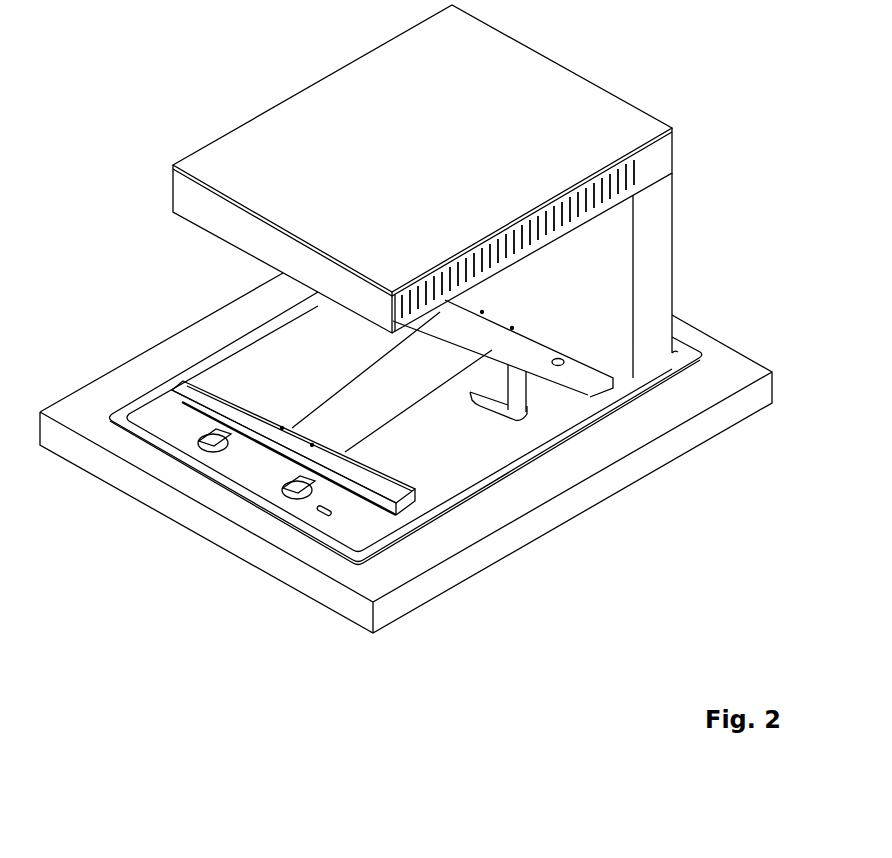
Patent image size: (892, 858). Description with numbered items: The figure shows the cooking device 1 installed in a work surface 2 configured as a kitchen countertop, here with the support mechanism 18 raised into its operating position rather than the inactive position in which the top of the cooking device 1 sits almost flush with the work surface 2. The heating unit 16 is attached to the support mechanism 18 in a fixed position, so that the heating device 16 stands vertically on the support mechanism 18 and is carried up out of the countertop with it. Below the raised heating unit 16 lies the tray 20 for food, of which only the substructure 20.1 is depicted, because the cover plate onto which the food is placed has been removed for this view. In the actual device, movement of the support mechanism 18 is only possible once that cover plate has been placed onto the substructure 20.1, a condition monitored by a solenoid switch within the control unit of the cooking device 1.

The cooking device 1 is at (407, 546).
The work surface 2 is at (545, 478).
The heating unit 16 is at (510, 152).
The support mechanism 18 is at (615, 290).
The tray 20 is at (426, 480).
The substructure 20.1 is at (443, 355).